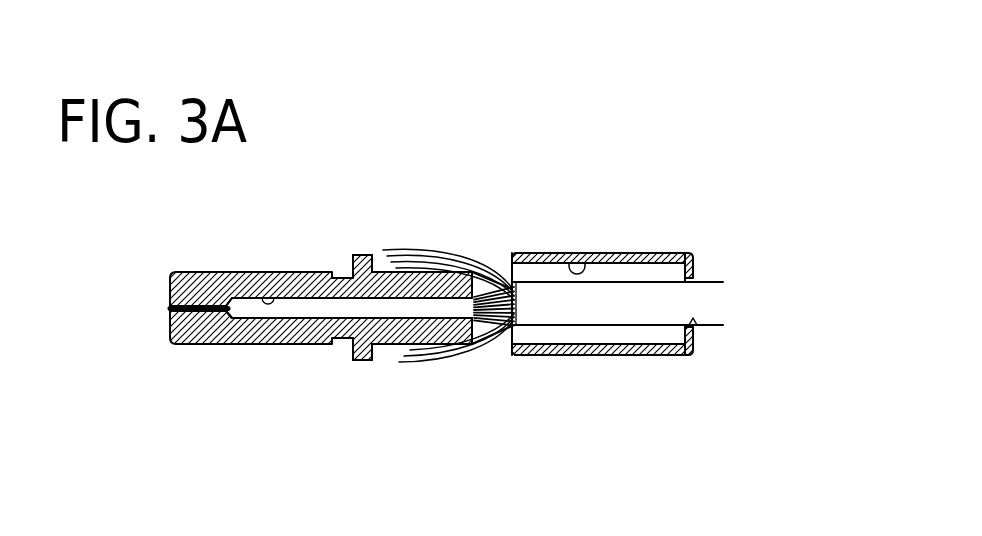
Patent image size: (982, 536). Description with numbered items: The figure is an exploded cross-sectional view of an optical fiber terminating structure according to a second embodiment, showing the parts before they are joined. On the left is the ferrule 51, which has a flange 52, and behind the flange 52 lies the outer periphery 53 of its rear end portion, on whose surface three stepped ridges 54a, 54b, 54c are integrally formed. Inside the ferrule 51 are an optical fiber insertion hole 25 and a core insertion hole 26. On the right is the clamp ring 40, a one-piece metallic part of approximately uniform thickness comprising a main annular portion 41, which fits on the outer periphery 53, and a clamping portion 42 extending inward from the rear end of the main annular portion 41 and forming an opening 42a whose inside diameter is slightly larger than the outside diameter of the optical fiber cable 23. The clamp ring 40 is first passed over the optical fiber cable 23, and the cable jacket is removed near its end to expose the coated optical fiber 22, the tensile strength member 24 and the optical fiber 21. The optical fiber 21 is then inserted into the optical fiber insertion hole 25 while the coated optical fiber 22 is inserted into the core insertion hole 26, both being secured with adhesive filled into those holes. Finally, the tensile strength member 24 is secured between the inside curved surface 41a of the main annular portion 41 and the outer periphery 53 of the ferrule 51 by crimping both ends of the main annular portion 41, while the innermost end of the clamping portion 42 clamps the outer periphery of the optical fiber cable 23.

The clamp ring 40 is at (664, 141).
The optical fiber 21 is at (168, 310).
The coated optical fiber 22 is at (310, 346).
The optical fiber cable 23 is at (613, 320).
The tensile strength member 24 is at (490, 258).
The optical fiber insertion hole 25 is at (200, 303).
The core insertion hole 26 is at (270, 297).
The main annular portion 41 is at (638, 252).
The inside curved surface 41a is at (590, 252).
The clamping portion 42 is at (710, 256).
The opening 42a is at (697, 324).
The ferrule 51 is at (222, 345).
The flange 52 is at (357, 361).
The outer periphery 53 is at (450, 258).
The stepped ridge 54a is at (407, 357).
The stepped ridge 54b is at (424, 357).
The stepped ridge 54c is at (449, 357).